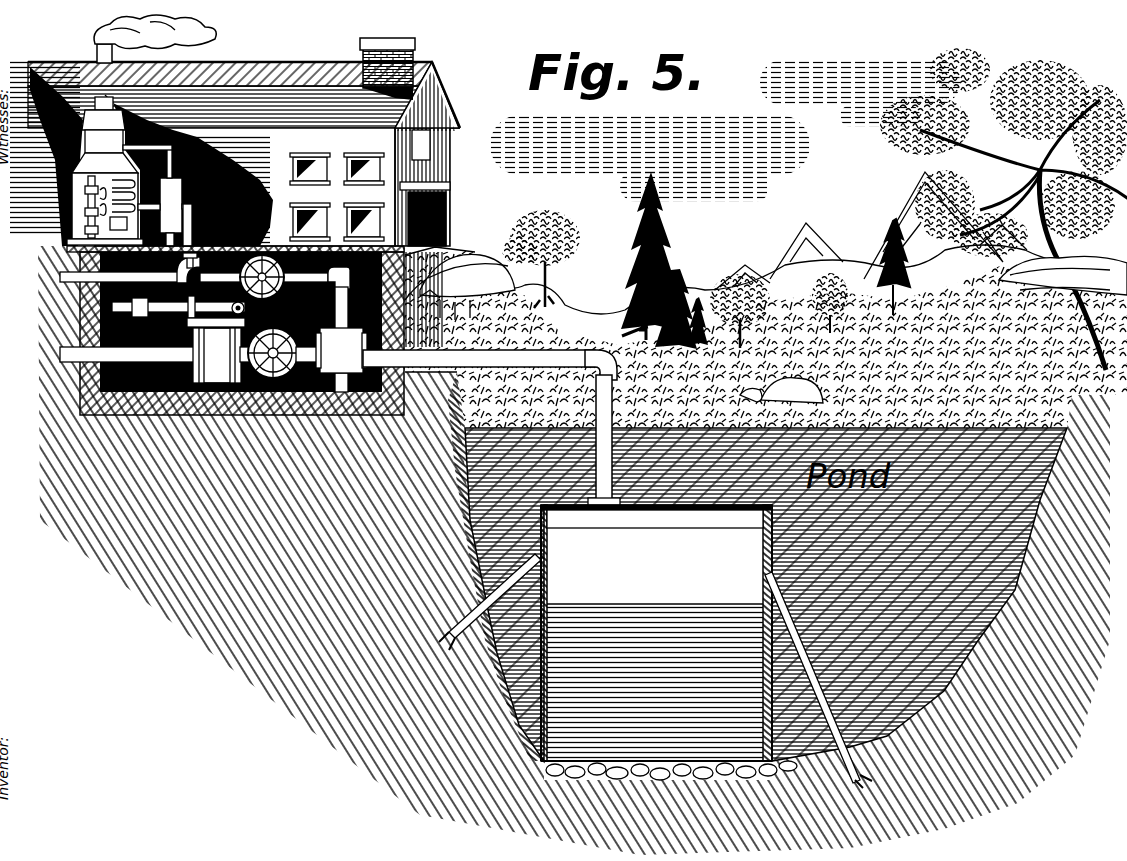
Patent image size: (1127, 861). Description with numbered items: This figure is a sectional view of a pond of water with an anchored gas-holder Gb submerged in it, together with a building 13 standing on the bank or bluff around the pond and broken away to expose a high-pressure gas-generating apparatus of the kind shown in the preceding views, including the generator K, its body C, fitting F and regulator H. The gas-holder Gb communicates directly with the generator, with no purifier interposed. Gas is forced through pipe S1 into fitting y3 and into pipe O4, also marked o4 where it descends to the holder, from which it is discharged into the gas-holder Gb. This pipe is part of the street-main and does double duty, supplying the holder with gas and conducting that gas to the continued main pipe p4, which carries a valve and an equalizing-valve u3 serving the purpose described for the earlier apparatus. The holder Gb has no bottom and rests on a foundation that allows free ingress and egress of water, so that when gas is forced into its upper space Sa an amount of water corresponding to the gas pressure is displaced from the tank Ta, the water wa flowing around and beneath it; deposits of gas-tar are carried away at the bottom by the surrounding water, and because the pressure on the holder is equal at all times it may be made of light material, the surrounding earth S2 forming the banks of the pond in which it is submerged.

The heater/boiler K is at (105, 135).
The boiler body C is at (105, 209).
The fitting F is at (120, 230).
The regulator box H is at (157, 195).
The pipe S1 is at (205, 303).
The house 13 is at (244, 131).
The continued main pipe p4 is at (130, 356).
The equalizing-valve u3 is at (217, 355).
The fitting y3 is at (341, 350).
The pipe O4 is at (491, 427).
The pipe o4 is at (624, 455).
The ground S2 is at (574, 550).
The tank air space Sa is at (655, 566).
The tank Ta is at (656, 633).
The gas-holder Gb is at (779, 526).
The water pipes wa is at (651, 677).